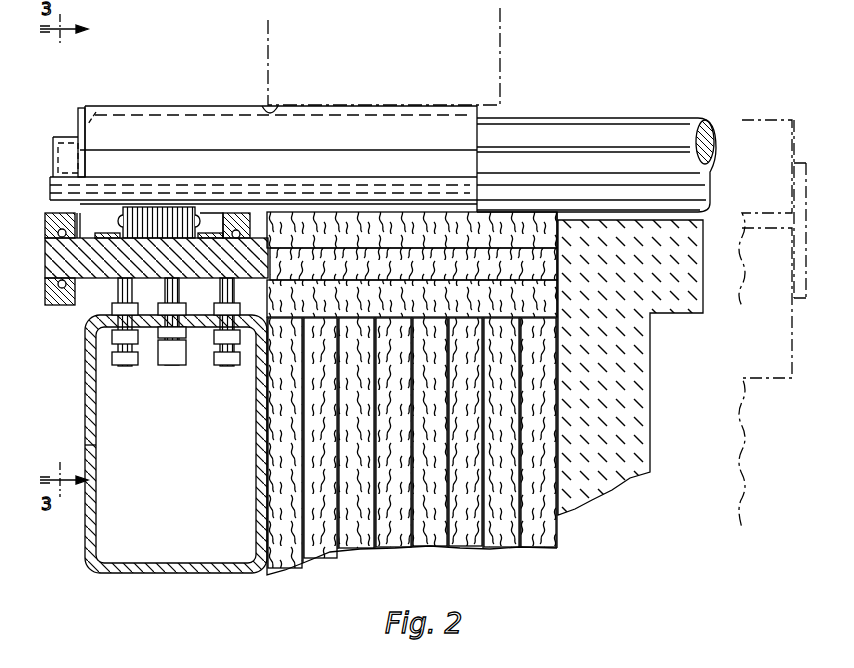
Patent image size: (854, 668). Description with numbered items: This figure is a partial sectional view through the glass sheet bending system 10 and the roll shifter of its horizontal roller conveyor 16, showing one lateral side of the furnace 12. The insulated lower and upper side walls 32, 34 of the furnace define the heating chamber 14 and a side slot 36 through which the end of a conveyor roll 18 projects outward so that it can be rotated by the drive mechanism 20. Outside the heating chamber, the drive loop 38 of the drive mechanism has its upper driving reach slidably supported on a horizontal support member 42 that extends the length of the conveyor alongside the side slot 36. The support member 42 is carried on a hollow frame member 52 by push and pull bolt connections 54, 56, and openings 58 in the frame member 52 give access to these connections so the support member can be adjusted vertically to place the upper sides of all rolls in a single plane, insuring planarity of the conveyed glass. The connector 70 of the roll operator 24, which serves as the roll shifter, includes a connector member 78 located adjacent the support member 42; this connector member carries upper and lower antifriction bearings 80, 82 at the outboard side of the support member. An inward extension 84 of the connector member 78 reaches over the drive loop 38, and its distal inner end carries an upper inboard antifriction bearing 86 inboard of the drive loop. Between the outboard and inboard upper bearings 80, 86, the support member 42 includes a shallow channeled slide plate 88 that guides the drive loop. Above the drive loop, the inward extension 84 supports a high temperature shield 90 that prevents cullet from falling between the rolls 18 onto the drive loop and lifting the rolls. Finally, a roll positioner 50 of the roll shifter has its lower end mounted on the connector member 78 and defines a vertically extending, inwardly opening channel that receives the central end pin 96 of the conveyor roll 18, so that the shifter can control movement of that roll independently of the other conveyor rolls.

The glass sheet bending system 10 is at (168, 46).
The furnace 12 is at (262, 40).
The heating chamber 14 is at (503, 63).
The horizontal roller conveyor 16 is at (592, 102).
The conveyor rolls 18 is at (750, 120).
The drive mechanism 20 is at (220, 207).
The roll operator 24 is at (98, 62).
The lower side wall 32 is at (320, 558).
The upper side wall 34 is at (266, 70).
The side slot 36 is at (264, 106).
The drive loop 38 is at (178, 210).
The support member 42 is at (110, 272).
The roll positioner 50 is at (50, 162).
The hollow frame member 52 is at (112, 572).
The push bolt connection 54 is at (125, 366).
The pull bolt connection 56 is at (178, 362).
The opening 58 is at (92, 444).
The connector 70 is at (52, 293).
The connector member 78 is at (50, 305).
The upper outboard antifriction bearing 80 is at (75, 220).
The lower antifriction bearing 82 is at (77, 300).
The inward extension 84 is at (140, 176).
The upper inboard antifriction bearing 86 is at (250, 215).
The slide plate 88 is at (118, 232).
The high temperature shield 90 is at (150, 106).
The central end pin 96 is at (96, 112).